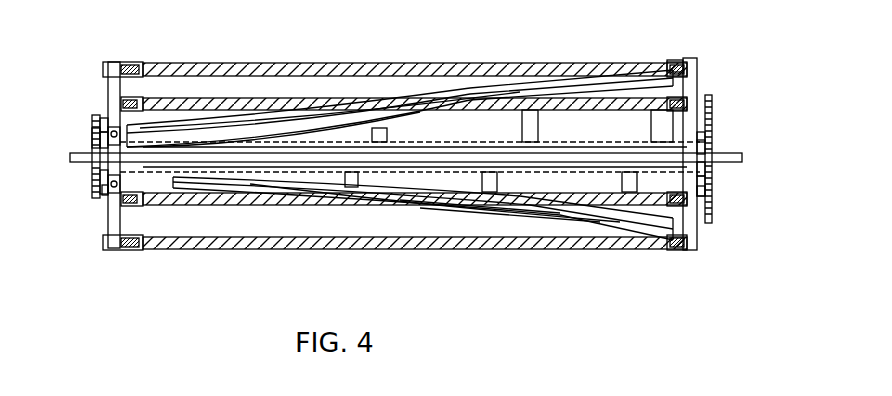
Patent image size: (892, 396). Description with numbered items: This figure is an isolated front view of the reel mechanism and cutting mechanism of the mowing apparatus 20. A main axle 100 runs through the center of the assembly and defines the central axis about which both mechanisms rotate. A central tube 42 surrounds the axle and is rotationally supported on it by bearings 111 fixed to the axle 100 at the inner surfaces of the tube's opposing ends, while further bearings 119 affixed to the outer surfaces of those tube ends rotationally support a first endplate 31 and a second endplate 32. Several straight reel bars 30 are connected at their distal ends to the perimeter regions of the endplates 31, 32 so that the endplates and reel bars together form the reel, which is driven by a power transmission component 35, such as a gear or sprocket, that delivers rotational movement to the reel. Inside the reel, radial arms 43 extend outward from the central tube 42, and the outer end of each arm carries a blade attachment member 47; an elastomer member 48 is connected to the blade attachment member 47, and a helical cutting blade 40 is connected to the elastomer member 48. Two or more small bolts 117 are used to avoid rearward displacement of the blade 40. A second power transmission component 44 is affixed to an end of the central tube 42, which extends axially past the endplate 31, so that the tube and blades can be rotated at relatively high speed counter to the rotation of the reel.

The apparatus 20 is at (278, 60).
The reel bar 30 is at (148, 62).
The first endplate 31 is at (105, 85).
The second endplate 32 is at (700, 88).
The power transmission component 35 is at (713, 120).
The cutting blade 40 is at (577, 90).
The central tube 42 is at (350, 142).
The radial arm 43 is at (647, 123).
The power transmission component 44 is at (90, 127).
The blade attachment member 47 is at (537, 248).
The elastomer member 48 is at (500, 248).
The main axle 100 is at (727, 163).
The bearing 111 is at (717, 147).
The small bolt 117 is at (670, 73).
The bearing 119 is at (710, 193).